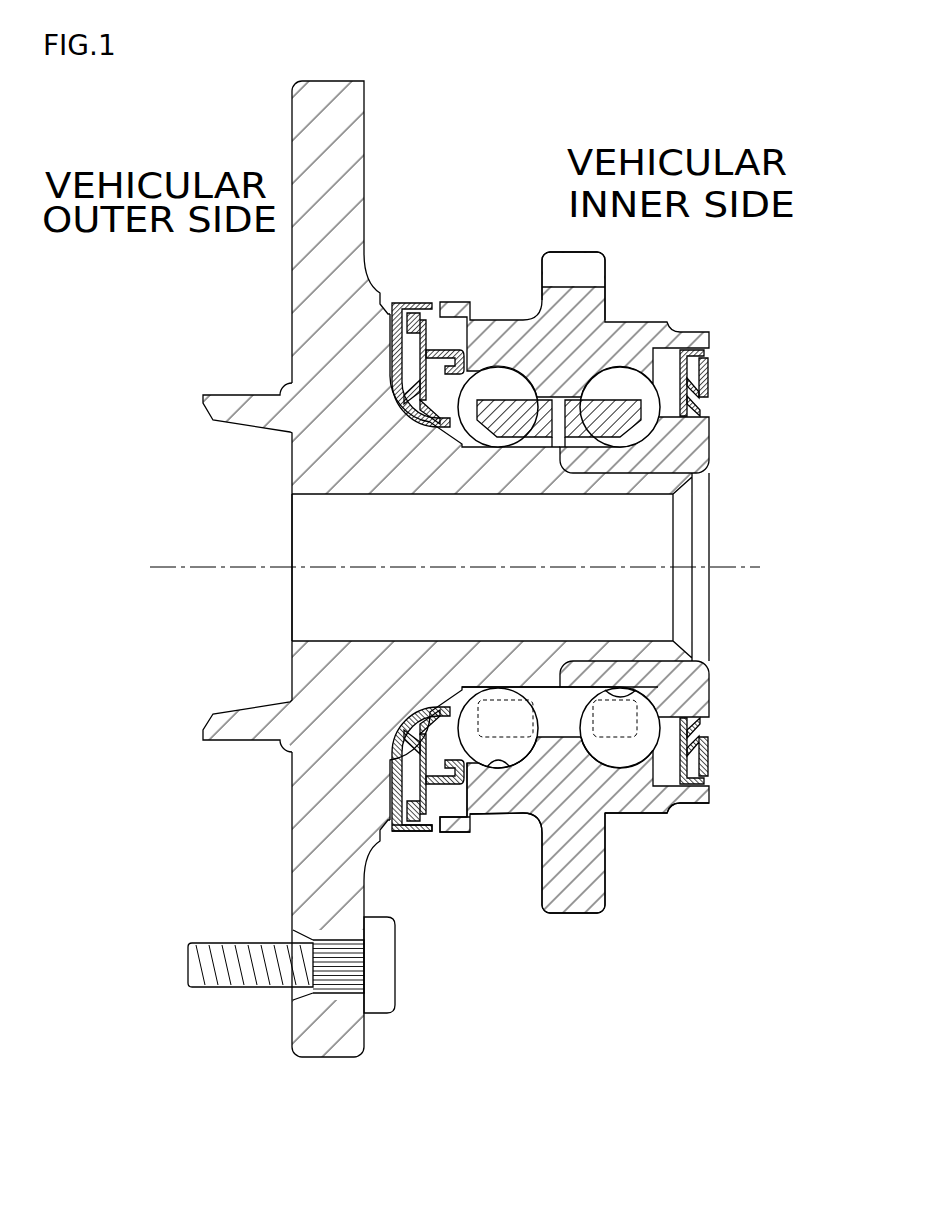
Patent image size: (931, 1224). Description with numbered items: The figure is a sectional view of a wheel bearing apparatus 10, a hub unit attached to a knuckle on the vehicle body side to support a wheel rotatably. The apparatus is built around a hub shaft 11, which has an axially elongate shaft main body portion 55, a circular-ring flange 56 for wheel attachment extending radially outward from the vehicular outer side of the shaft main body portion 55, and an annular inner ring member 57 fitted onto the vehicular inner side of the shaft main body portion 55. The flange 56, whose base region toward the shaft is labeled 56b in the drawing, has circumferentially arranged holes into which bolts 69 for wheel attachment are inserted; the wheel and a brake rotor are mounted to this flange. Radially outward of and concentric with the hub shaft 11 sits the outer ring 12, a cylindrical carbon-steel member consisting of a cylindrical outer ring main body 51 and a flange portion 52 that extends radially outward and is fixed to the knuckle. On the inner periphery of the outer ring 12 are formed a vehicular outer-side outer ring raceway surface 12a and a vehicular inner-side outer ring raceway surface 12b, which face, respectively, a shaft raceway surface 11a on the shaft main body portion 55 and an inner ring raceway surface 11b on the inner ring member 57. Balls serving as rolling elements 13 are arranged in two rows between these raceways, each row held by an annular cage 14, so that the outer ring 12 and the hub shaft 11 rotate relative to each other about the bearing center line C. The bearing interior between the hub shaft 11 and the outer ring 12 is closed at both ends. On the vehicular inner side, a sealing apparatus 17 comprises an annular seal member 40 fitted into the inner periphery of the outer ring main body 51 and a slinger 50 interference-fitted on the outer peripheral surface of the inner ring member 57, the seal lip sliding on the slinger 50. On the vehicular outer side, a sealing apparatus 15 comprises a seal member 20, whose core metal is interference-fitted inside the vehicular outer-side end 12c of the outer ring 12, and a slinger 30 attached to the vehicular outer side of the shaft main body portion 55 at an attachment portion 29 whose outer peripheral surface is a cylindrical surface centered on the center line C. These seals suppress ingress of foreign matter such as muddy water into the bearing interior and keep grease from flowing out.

The wheel bearing apparatus 10 is at (637, 318).
The hub shaft 11 is at (292, 463).
The shaft raceway surface 11a is at (478, 700).
The inner ring raceway surface 11b is at (612, 700).
The outer ring 12 is at (668, 323).
The vehicular outer-side outer ring raceway surface 12a is at (486, 766).
The vehicular inner-side outer ring raceway surface 12b is at (616, 764).
The vehicular outer-side end 12c is at (446, 820).
The rolling elements 13 is at (633, 378).
The cages 14 is at (609, 398).
The vehicular outer-side sealing apparatus 15 is at (405, 298).
The vehicular inner-side sealing apparatus 17 is at (720, 351).
The seal member 20 is at (346, 765).
The attachment portion 29 is at (412, 709).
The slinger 30 is at (387, 833).
The seal member 40 is at (720, 749).
The slinger 50 is at (723, 751).
The outer ring main body 51 is at (512, 797).
The flange portion 52 is at (575, 907).
The shaft main body portion 55 is at (516, 494).
The flange 56 is at (312, 130).
The flange base portion 56b is at (370, 328).
The inner ring member 57 is at (673, 442).
The bolts 69 is at (213, 988).
The bearing center line C is at (733, 553).